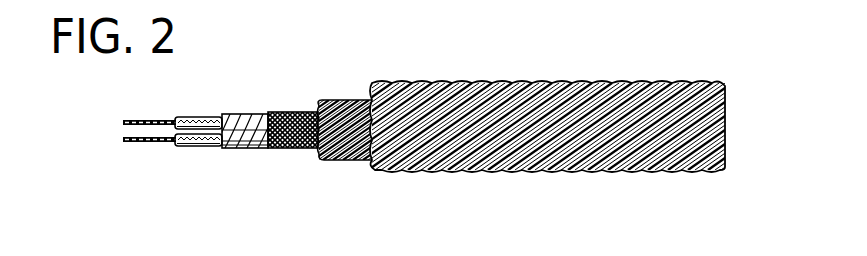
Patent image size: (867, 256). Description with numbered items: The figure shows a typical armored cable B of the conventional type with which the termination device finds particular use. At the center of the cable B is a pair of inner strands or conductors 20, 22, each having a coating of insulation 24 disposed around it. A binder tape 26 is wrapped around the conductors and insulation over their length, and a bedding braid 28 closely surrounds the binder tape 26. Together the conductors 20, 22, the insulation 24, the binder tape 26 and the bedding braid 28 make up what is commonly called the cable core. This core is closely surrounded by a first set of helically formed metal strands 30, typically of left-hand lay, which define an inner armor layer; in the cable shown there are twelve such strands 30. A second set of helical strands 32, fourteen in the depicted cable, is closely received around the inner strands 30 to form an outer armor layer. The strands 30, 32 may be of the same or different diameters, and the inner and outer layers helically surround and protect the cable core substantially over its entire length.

The inner conductor 20 is at (145, 121).
The inner conductor 22 is at (145, 142).
The insulation 24 is at (203, 117).
The binder tape 26 is at (245, 118).
The bedding braid 28 is at (300, 148).
The inner armor layer strands 30 is at (341, 100).
The outer armor layer strands 32 is at (479, 172).
The armored cable B is at (382, 76).